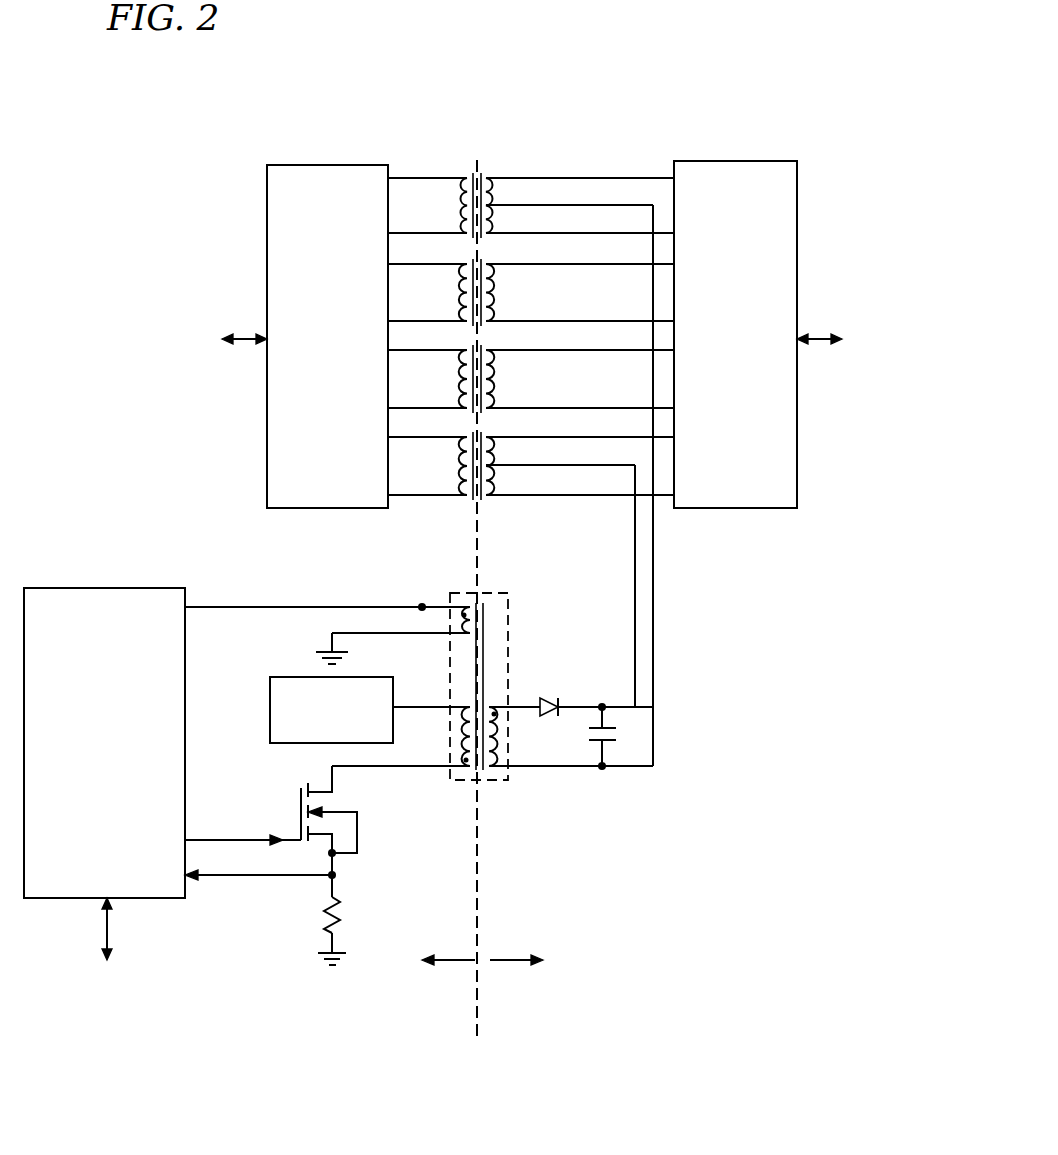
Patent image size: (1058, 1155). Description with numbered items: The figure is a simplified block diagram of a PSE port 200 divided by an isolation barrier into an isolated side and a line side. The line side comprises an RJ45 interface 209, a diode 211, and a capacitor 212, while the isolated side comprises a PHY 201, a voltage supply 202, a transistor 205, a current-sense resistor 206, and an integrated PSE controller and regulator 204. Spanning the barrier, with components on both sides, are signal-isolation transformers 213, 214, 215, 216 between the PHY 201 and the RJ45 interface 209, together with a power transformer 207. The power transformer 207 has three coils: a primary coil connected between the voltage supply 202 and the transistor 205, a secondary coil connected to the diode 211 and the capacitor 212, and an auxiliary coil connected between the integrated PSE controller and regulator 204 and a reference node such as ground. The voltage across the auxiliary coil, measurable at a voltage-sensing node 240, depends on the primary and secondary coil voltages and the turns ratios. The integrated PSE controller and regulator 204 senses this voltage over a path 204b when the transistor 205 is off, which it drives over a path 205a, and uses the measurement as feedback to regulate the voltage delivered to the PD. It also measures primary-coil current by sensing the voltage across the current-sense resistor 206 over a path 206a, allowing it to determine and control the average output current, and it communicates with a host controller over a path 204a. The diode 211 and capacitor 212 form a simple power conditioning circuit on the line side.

The PSE port 200 is at (190, 80).
The PHY 201 is at (335, 165).
The voltage supply 202 is at (270, 708).
The integrated PSE controller and regulator 204 is at (75, 588).
The host controller path 204a is at (105, 930).
The path 204b is at (283, 605).
The transistor 205 is at (298, 802).
The transistor drive path 205a is at (220, 838).
The current-sense resistor 206 is at (345, 912).
The path 206a is at (244, 880).
The power transformer 207 is at (498, 593).
The RJ45 interface 209 is at (742, 161).
The diode 211 is at (552, 700).
The capacitor 212 is at (590, 736).
The signal-isolation transformer 213 is at (455, 220).
The signal-isolation transformer 214 is at (455, 305).
The signal-isolation transformer 215 is at (455, 392).
The signal-isolation transformer 216 is at (455, 478).
The voltage-sensing node 240 is at (422, 604).